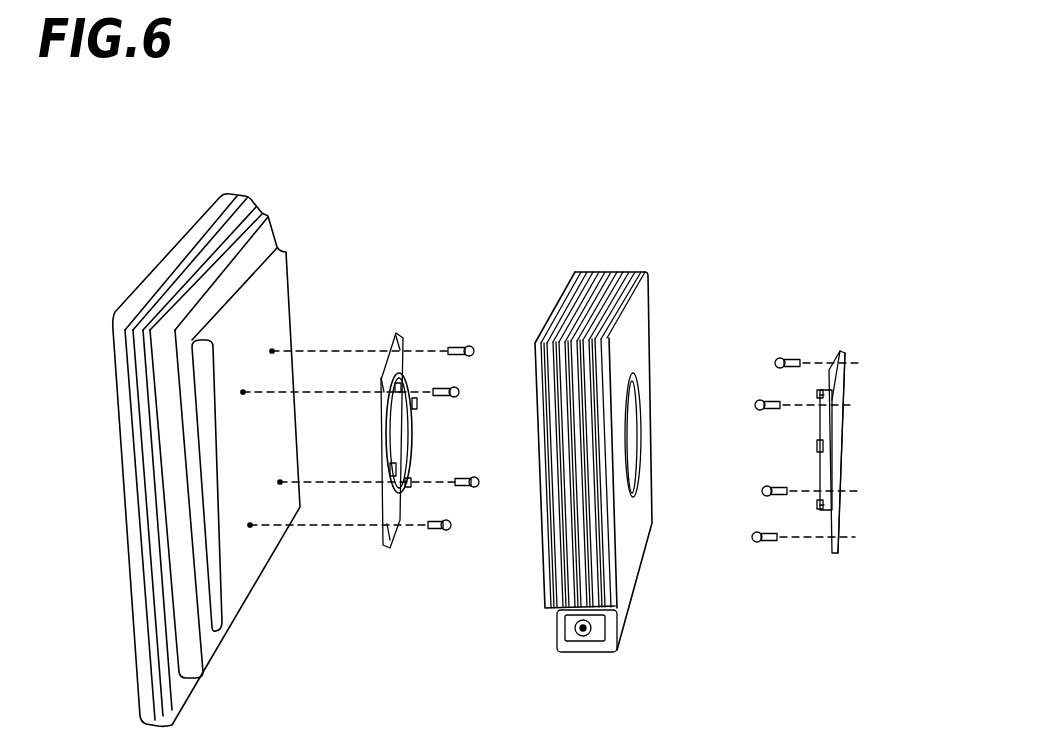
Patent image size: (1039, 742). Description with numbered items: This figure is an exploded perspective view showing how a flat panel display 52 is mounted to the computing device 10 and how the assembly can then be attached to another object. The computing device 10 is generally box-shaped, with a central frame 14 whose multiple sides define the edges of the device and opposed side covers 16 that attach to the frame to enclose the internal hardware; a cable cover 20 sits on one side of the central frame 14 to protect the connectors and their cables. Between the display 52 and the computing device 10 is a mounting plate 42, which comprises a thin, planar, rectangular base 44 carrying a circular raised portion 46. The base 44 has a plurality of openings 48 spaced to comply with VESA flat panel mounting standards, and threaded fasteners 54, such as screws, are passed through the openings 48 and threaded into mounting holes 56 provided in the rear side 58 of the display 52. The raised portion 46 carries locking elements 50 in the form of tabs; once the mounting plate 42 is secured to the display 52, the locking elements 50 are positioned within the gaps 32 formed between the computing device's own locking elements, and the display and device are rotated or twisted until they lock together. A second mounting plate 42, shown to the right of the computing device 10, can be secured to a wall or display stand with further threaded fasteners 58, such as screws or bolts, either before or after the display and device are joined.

The computing device 10 is at (722, 210).
The central frame 14 is at (607, 272).
The side covers 16 is at (556, 295).
The cable cover 20 is at (622, 618).
The gaps 32 is at (638, 335).
The mounting plate 42 is at (405, 302).
The base 44 is at (398, 522).
The raised portion 46 is at (402, 440).
The openings 48 is at (400, 340).
The locking elements 50 is at (382, 512).
The flat panel display 52 is at (314, 179).
The threaded fasteners 54 is at (455, 393).
The mounting holes 56 is at (272, 351).
The rear side of the display / further threaded fasteners 58 is at (786, 358).